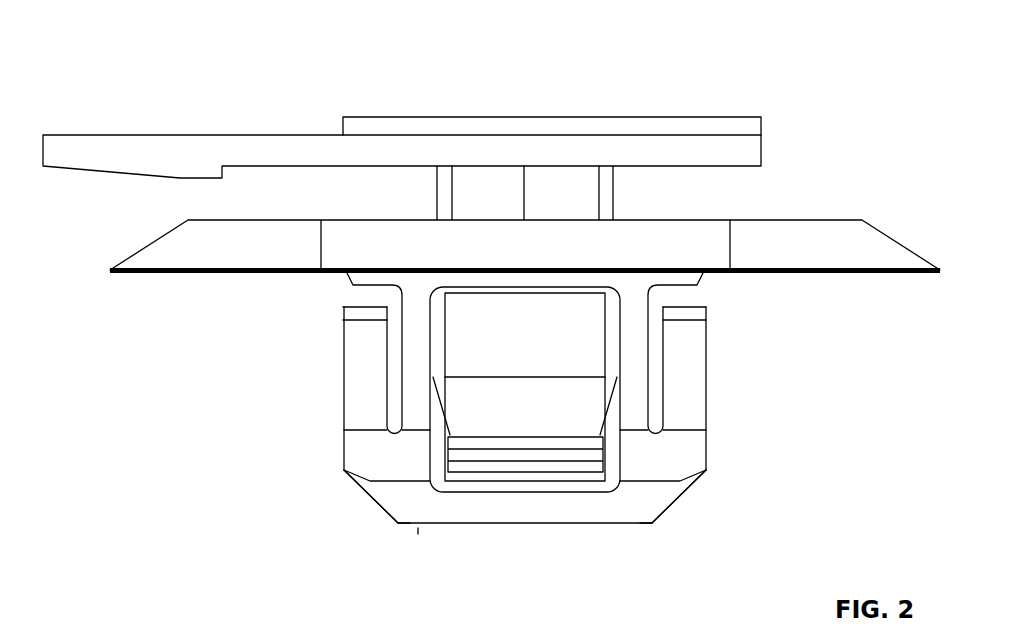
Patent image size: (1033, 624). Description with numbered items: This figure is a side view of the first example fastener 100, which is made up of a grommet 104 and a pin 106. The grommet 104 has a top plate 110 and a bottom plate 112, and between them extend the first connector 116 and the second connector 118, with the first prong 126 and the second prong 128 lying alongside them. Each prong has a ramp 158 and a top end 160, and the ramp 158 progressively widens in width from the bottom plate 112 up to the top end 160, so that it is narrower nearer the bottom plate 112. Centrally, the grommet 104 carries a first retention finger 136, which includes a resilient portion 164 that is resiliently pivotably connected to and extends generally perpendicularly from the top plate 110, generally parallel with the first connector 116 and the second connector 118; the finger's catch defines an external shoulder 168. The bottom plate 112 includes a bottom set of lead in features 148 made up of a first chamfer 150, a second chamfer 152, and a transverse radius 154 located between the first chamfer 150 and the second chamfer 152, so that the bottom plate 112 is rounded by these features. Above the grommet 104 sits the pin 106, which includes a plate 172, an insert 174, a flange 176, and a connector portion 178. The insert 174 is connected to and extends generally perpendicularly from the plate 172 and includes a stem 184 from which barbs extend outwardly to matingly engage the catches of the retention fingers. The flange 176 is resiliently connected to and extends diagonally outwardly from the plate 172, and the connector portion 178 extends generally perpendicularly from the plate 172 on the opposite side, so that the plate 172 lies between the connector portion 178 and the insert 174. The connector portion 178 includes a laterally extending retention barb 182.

The fastener 100 is at (114, 50).
The grommet 104 is at (702, 343).
The pin 106 is at (828, 232).
The top plate 110 is at (683, 280).
The bottom plate 112 is at (698, 452).
The first connector 116 is at (415, 350).
The second connector 118 is at (640, 345).
The first prong 126 is at (367, 412).
The second prong 128 is at (693, 372).
The first retention finger 136 is at (577, 355).
The bottom set of lead in features 148 is at (416, 536).
The first chamfer 150 is at (365, 503).
The second chamfer 152 is at (685, 503).
The transverse radius 154 is at (597, 510).
The ramp 158 is at (355, 360).
The top end 160 is at (365, 307).
The resilient portion 164 is at (497, 343).
The external shoulder 168 is at (503, 425).
The plate 172 is at (695, 235).
The insert 174 is at (437, 338).
The flange 176 is at (153, 256).
The connector portion 178 is at (553, 135).
The retention barb 182 is at (112, 155).
The stem 184 is at (612, 338).